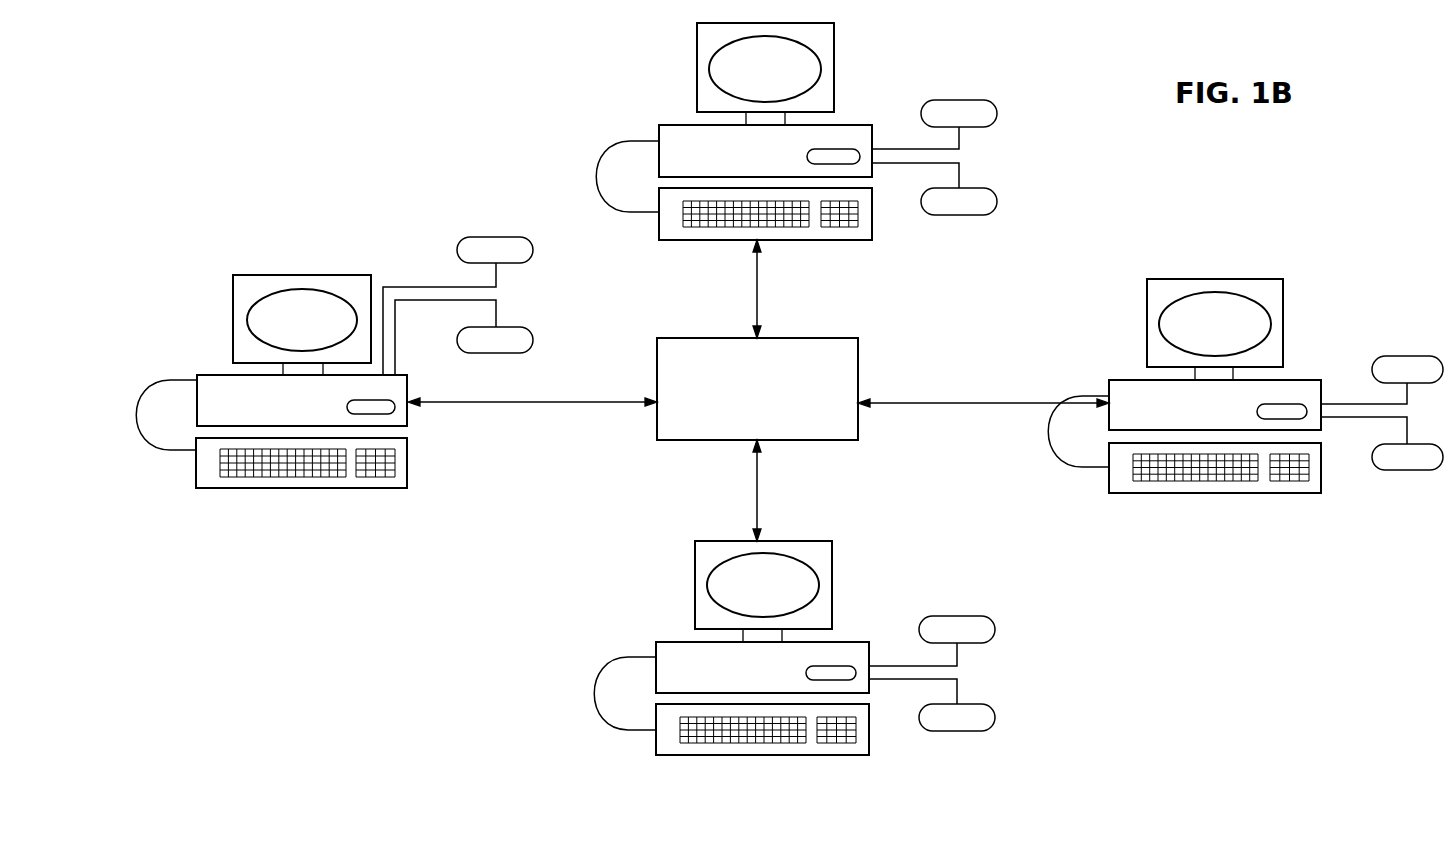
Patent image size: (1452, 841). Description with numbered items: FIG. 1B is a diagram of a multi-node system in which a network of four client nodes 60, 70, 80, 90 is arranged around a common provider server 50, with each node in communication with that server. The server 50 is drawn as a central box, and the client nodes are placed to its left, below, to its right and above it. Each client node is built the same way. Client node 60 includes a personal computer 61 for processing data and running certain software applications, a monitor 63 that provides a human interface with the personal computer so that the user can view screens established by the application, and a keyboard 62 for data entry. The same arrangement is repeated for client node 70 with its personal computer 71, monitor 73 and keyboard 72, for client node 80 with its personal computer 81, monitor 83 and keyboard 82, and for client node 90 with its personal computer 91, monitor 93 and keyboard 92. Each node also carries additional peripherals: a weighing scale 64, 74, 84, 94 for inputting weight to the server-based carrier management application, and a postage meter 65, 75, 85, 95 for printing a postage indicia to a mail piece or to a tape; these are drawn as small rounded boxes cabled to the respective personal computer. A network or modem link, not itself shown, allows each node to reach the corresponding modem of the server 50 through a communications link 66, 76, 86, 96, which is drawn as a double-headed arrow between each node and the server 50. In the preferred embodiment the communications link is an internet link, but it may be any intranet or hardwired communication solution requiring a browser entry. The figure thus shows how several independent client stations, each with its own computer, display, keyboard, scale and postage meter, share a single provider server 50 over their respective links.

The server 50 is at (697, 338).
The client node 60 is at (175, 314).
The personal computer 61 is at (257, 416).
The keyboard 62 is at (408, 477).
The monitor 63 is at (289, 332).
The weighing scale 64 is at (495, 340).
The postage meter 65 is at (495, 250).
The communications link 66 is at (563, 403).
The client node 70 is at (622, 592).
The personal computer 71 is at (718, 683).
The keyboard 72 is at (869, 750).
The monitor 73 is at (750, 597).
The weighing scale 74 is at (957, 717).
The postage meter 75 is at (957, 629).
The communications link 76 is at (739, 490).
The client node 80 is at (1398, 266).
The personal computer 81 is at (1170, 420).
The keyboard 82 is at (1280, 493).
The monitor 83 is at (1202, 336).
The weighing scale 84 is at (1407, 457).
The postage meter 85 is at (1407, 369).
The communications link 86 is at (1007, 402).
The client node 90 is at (923, 25).
The personal computer 91 is at (718, 166).
The keyboard 92 is at (872, 224).
The monitor 93 is at (752, 81).
The weighing scale 94 is at (959, 201).
The postage meter 95 is at (959, 113).
The communications link 96 is at (758, 302).